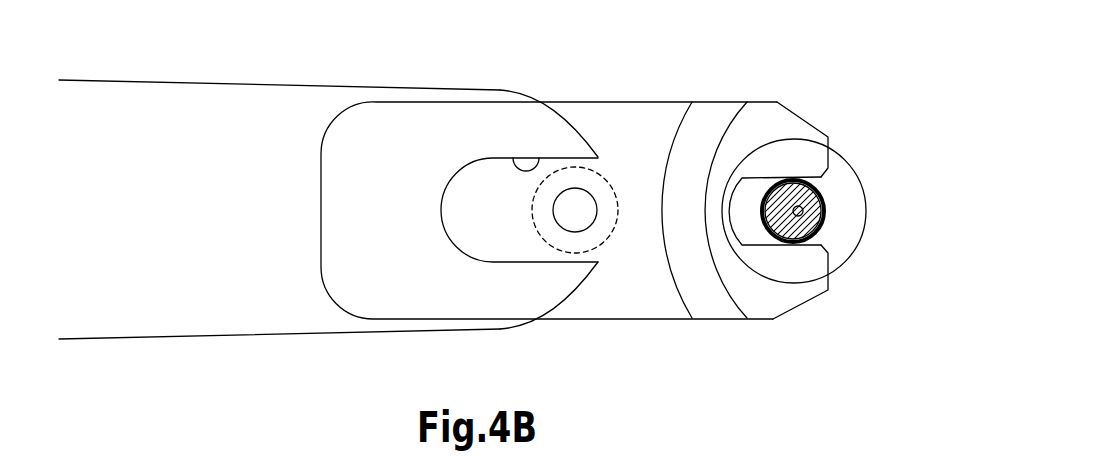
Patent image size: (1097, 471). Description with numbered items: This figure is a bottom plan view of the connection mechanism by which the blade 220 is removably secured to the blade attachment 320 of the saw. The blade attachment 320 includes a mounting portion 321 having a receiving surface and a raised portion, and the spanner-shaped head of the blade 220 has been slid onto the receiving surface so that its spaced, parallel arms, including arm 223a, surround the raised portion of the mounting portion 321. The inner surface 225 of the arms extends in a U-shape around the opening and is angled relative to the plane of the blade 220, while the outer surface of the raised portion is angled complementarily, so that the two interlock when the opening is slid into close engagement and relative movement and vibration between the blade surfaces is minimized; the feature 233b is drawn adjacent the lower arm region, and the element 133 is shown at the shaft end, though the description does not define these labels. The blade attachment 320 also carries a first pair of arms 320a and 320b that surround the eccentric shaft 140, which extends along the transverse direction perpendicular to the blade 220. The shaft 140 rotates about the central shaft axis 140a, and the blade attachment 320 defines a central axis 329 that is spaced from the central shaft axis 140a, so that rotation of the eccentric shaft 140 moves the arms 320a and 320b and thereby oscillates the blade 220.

The blade 220 is at (223, 142).
The inner surface 225 is at (513, 158).
The arm 223a is at (580, 128).
The lower curved surface 233b is at (573, 298).
The mounting portion 321 is at (648, 127).
The blade attachment 320 is at (660, 320).
The arm 320a is at (788, 293).
The arm 320b is at (767, 125).
The central axis 329 is at (780, 175).
The eccentric shaft 140 is at (823, 200).
The central shaft axis 140a is at (801, 213).
The pin housing circle 133 is at (866, 221).